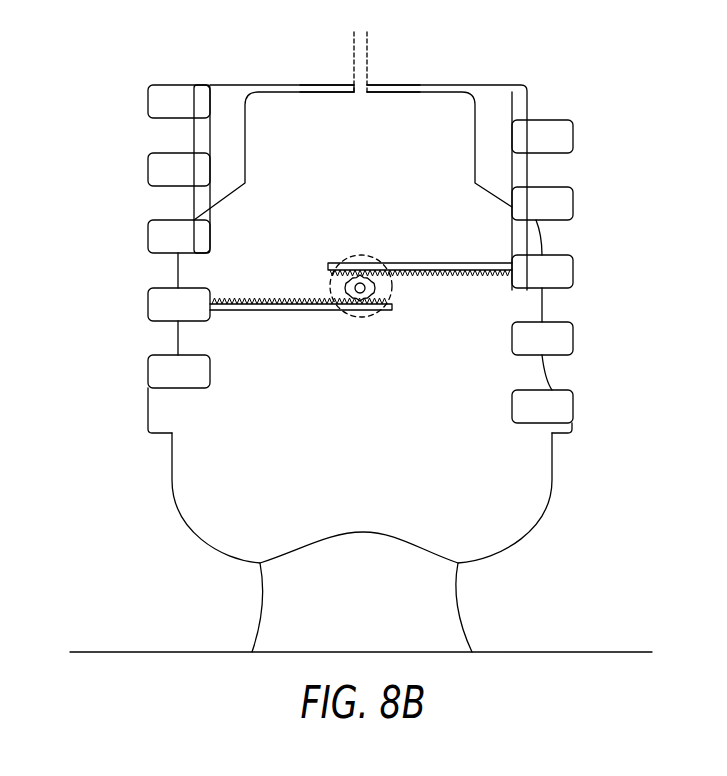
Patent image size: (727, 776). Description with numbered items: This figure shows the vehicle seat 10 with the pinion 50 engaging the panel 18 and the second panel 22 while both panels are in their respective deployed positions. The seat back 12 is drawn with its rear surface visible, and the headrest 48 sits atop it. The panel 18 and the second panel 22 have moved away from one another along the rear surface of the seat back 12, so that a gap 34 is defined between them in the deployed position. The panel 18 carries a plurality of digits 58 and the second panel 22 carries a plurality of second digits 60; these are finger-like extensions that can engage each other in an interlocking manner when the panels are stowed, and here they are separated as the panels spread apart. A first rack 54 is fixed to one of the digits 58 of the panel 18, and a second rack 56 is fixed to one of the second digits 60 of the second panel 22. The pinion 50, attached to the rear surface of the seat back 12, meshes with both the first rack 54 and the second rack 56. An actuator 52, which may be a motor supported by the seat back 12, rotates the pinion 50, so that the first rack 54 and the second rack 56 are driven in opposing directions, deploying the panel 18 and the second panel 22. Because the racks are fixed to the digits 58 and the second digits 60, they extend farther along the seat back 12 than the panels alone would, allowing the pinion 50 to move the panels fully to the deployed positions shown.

The vehicle seat 10 is at (71, 93).
The seat back 12 is at (435, 103).
The panel 18 is at (247, 84).
The second panel 22 is at (525, 84).
The gap 34 is at (330, 47).
The headrest 48 is at (318, 84).
The pinion 50 is at (345, 289).
The actuator 52 is at (355, 257).
The first rack 54 is at (288, 311).
The second rack 56 is at (450, 262).
The digits 58 is at (160, 112).
The second digits 60 is at (560, 140).